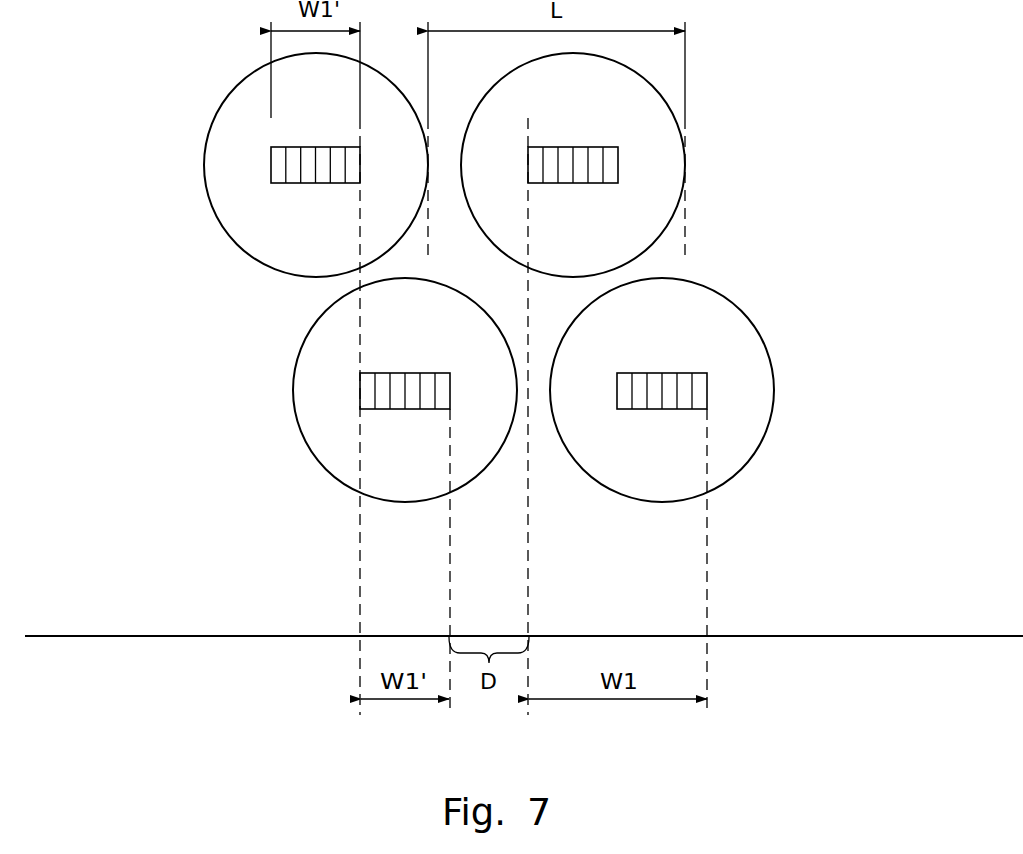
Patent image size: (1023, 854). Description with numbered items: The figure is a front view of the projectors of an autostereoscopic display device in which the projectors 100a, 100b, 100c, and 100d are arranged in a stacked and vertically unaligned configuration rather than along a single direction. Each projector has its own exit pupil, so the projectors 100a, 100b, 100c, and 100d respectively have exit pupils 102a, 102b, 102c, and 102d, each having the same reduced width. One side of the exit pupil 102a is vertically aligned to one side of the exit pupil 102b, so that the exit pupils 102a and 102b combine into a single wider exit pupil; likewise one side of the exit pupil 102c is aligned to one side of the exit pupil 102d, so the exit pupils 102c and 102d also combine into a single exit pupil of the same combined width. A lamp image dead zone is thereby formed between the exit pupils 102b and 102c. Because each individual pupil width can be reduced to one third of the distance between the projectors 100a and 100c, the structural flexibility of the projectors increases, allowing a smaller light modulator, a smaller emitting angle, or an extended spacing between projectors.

The projector 100a is at (345, 246).
The projector 100b is at (435, 472).
The projector 100c is at (603, 246).
The projector 100d is at (692, 472).
The exit pupil 102a is at (318, 147).
The exit pupil 102b is at (405, 373).
The exit pupil 102c is at (575, 147).
The exit pupil 102d is at (662, 373).